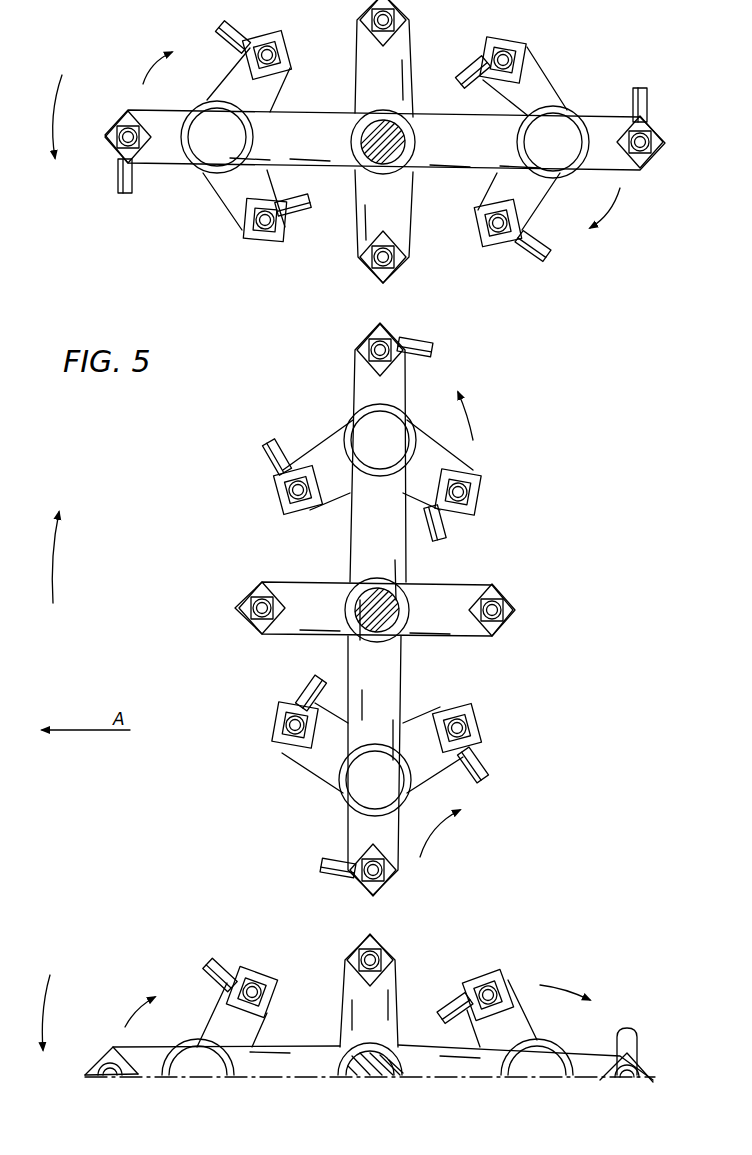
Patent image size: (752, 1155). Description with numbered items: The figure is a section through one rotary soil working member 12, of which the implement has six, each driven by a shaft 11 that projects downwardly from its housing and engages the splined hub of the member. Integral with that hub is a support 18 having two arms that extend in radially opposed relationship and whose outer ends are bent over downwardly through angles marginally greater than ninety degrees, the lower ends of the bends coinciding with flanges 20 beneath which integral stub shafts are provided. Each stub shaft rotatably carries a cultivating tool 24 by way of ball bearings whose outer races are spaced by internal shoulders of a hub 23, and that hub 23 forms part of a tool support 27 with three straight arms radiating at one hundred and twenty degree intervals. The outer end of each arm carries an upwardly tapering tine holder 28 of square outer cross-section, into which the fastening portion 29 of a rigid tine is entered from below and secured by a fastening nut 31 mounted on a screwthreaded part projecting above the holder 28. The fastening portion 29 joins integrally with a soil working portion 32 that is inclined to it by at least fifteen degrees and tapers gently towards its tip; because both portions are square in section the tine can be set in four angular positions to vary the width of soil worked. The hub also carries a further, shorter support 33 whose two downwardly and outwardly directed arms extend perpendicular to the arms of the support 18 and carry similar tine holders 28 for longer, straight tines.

The shaft 11 is at (405, 140).
The rotary soil working member 12 is at (256, 545).
The support 18 is at (437, 112).
The flange 20 is at (208, 150).
The hub 23 is at (219, 176).
The cultivating tool 24 is at (138, 110).
The tool support 27 is at (222, 88).
The tine holder 28 is at (282, 40).
The fastening portion 29 is at (253, 244).
The fastening nut 31 is at (285, 52).
The soil working portion 32 is at (225, 30).
The support 33 is at (358, 86).